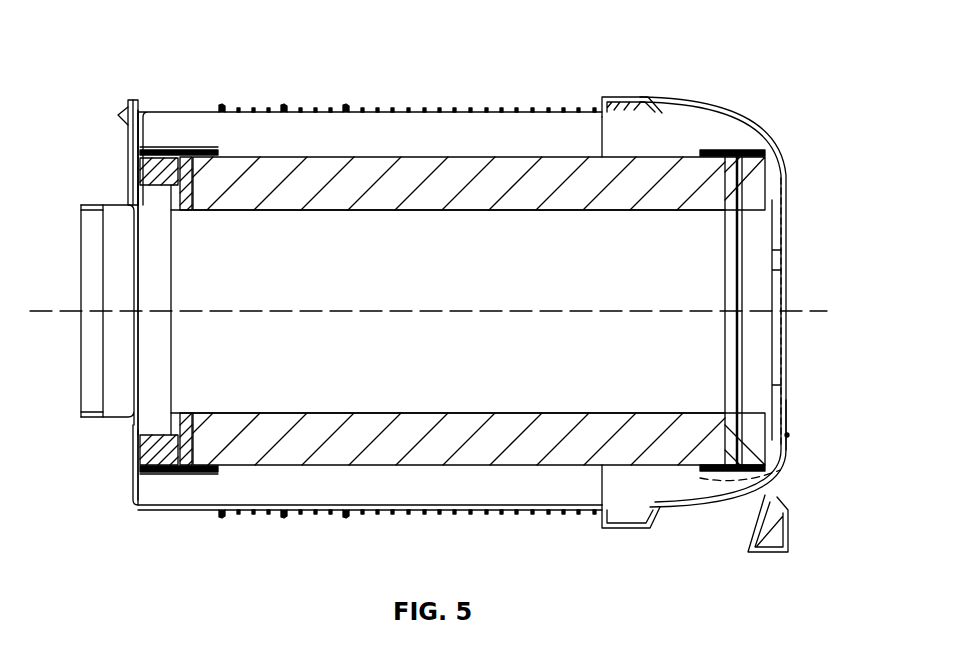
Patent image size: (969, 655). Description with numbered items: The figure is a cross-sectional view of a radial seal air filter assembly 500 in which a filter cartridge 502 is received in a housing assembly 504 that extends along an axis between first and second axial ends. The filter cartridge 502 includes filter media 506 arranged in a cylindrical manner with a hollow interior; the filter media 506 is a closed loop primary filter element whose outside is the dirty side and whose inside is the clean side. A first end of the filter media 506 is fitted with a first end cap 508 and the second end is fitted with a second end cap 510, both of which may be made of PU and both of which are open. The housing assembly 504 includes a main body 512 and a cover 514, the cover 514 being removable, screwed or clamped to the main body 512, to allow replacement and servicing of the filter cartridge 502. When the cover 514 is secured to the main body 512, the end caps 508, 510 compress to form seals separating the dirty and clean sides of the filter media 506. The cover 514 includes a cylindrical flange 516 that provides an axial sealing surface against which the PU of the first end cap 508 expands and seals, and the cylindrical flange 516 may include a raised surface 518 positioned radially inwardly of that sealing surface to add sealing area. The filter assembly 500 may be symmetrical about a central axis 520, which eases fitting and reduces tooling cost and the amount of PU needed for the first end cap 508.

The radial seal air filter assembly 500 is at (146, 40).
The filter cartridge 502 is at (692, 147).
The housing assembly 504 is at (573, 93).
The filter media 506 is at (243, 443).
The first end cap 508 is at (768, 182).
The second end cap 510 is at (148, 168).
The main body 512 is at (275, 110).
The cover 514 is at (672, 105).
The cylindrical flange 516 is at (792, 476).
The raised surface 518 is at (790, 435).
The central axis 520 is at (820, 312).